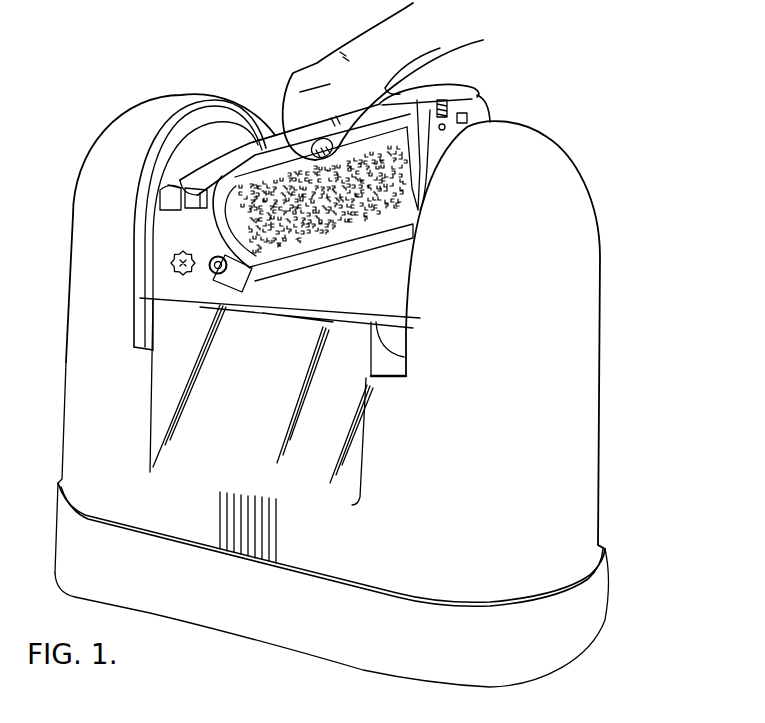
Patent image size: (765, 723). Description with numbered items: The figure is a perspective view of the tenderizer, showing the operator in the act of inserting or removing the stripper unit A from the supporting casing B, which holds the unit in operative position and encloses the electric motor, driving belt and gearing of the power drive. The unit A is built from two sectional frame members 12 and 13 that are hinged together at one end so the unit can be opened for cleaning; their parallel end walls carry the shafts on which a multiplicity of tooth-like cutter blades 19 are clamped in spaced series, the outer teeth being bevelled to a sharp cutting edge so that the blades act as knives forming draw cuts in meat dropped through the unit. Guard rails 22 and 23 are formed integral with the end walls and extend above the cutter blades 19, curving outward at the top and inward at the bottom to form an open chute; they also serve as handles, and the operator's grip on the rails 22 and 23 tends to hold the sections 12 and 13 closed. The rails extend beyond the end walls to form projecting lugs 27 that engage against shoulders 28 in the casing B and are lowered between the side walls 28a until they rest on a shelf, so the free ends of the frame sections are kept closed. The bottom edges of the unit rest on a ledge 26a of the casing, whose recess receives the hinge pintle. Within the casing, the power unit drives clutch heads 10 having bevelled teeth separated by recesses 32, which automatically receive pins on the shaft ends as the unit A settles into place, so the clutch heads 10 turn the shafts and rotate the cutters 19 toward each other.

The clutch heads 10 is at (217, 275).
The sectional frame member 12 is at (207, 216).
The sectional frame member 13 is at (456, 88).
The cutter blades 19 is at (347, 235).
The guard rail 22 is at (272, 152).
The guard rail 23 is at (307, 80).
The ledge 26a is at (405, 360).
The projecting lugs 27 is at (181, 183).
The shoulders 28 is at (160, 183).
The side walls 28a is at (180, 183).
The recesses 32 is at (173, 267).
The stripper unit A is at (479, 108).
The supporting casing B is at (562, 386).